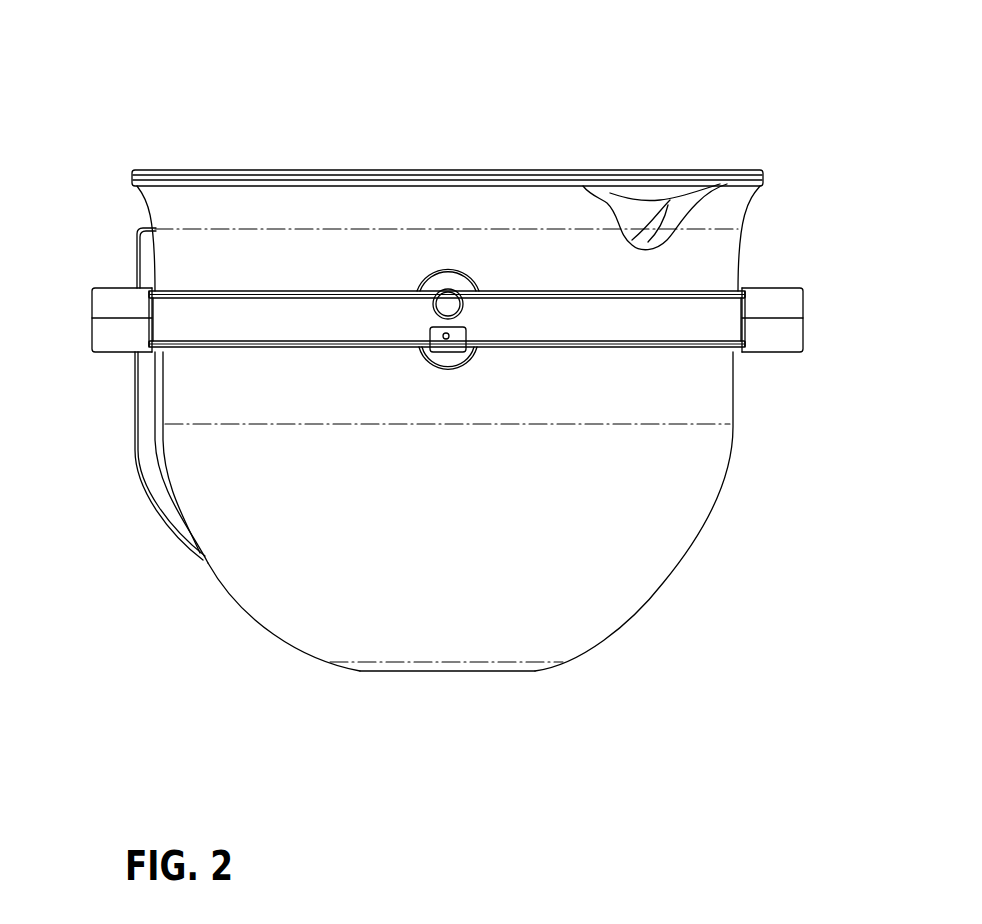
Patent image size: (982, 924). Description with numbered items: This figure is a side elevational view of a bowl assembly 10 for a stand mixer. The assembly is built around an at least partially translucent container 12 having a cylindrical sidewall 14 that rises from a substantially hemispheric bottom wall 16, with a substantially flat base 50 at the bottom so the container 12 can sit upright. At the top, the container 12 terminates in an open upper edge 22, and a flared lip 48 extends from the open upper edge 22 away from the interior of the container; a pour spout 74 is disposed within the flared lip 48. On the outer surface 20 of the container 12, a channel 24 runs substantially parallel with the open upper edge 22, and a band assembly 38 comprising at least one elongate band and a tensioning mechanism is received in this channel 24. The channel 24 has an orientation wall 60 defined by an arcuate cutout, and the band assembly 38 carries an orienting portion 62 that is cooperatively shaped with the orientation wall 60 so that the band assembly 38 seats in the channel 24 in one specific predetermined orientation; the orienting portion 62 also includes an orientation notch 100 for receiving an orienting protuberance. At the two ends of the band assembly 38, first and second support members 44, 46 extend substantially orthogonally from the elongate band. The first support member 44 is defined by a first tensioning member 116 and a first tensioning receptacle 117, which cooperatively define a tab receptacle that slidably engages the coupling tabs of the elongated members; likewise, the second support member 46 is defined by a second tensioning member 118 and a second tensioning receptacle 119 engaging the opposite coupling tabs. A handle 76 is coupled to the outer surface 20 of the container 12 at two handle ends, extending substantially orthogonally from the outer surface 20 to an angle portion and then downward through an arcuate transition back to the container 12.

The bowl assembly 10 is at (553, 92).
The container 12 is at (302, 165).
The sidewall 14 is at (293, 413).
The bottom wall 16 is at (328, 650).
The outer surface 20 is at (607, 590).
The open upper edge 22 is at (625, 170).
The channel 24 is at (738, 290).
The band assembly 38 is at (249, 308).
The first support member 44 is at (133, 343).
The second support member 46 is at (748, 345).
The flared lip 48 is at (142, 195).
The flat base 50 is at (500, 672).
The orientation wall 60 is at (460, 270).
The orienting portion 62 is at (472, 305).
The pour spout 74 is at (682, 200).
The handle 76 is at (145, 460).
The orientation notch 100 is at (432, 330).
The first tensioning member 116 is at (102, 297).
The first tensioning receptacle 117 is at (103, 343).
The second tensioning member 118 is at (780, 300).
The second tensioning receptacle 119 is at (790, 345).